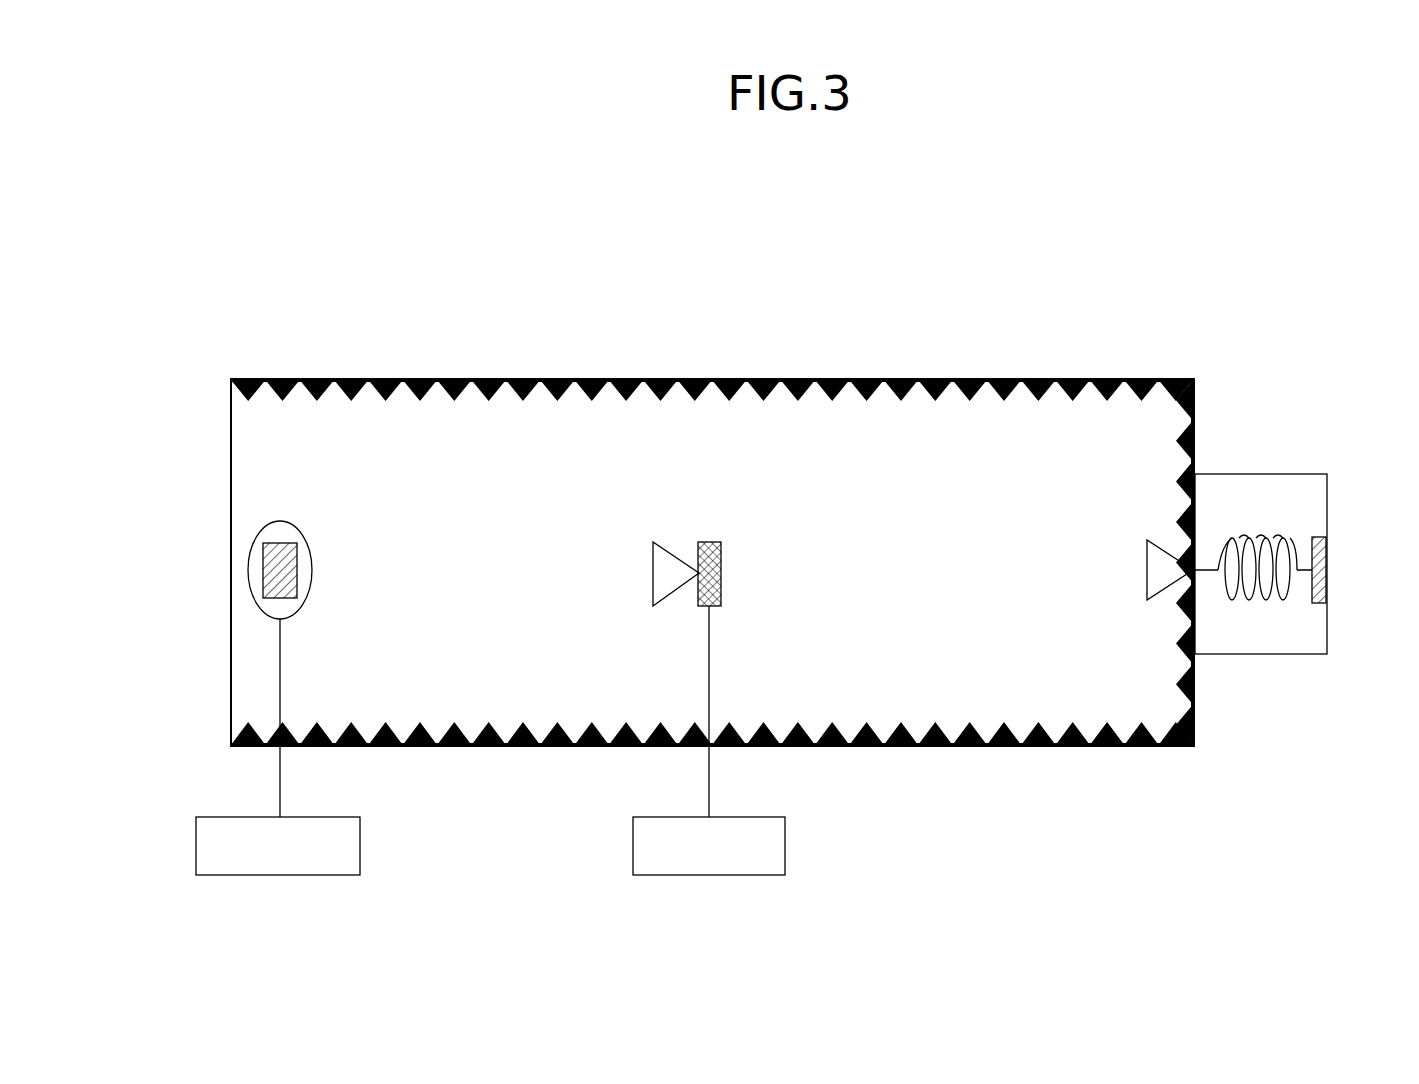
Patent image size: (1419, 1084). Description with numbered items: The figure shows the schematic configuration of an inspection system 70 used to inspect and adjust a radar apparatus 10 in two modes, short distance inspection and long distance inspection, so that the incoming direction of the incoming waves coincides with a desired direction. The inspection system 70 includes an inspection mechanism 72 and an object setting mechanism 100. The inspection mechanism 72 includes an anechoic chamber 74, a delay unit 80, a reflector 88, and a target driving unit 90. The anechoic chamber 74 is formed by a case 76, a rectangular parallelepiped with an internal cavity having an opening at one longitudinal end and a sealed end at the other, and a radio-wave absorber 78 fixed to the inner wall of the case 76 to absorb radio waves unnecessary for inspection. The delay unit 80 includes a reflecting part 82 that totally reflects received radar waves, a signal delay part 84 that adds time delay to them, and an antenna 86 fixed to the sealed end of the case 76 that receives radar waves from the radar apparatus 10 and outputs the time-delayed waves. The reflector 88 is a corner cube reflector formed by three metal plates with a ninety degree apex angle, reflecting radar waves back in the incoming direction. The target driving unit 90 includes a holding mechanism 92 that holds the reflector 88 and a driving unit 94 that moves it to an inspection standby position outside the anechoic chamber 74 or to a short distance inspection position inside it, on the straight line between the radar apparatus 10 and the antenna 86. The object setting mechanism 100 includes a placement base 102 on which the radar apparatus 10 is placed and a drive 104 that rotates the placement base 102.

The radar apparatus 10 is at (263, 568).
The inspection system 70 is at (946, 160).
The inspection mechanism 72 is at (699, 214).
The anechoic chamber 74 is at (448, 308).
The case 76 is at (463, 380).
The radio-wave absorber 78 is at (523, 380).
The delay unit 80 is at (1215, 412).
The reflecting part 82 is at (1323, 535).
The signal delay part 84 is at (1262, 527).
The antenna 86 is at (1165, 572).
The reflector 88 is at (668, 573).
The target driving unit 90 is at (902, 780).
The holding mechanism 92 is at (718, 597).
The driving unit 94 is at (785, 845).
The object setting mechanism 100 is at (472, 772).
The placement base 102 is at (312, 582).
The drive 104 is at (360, 828).